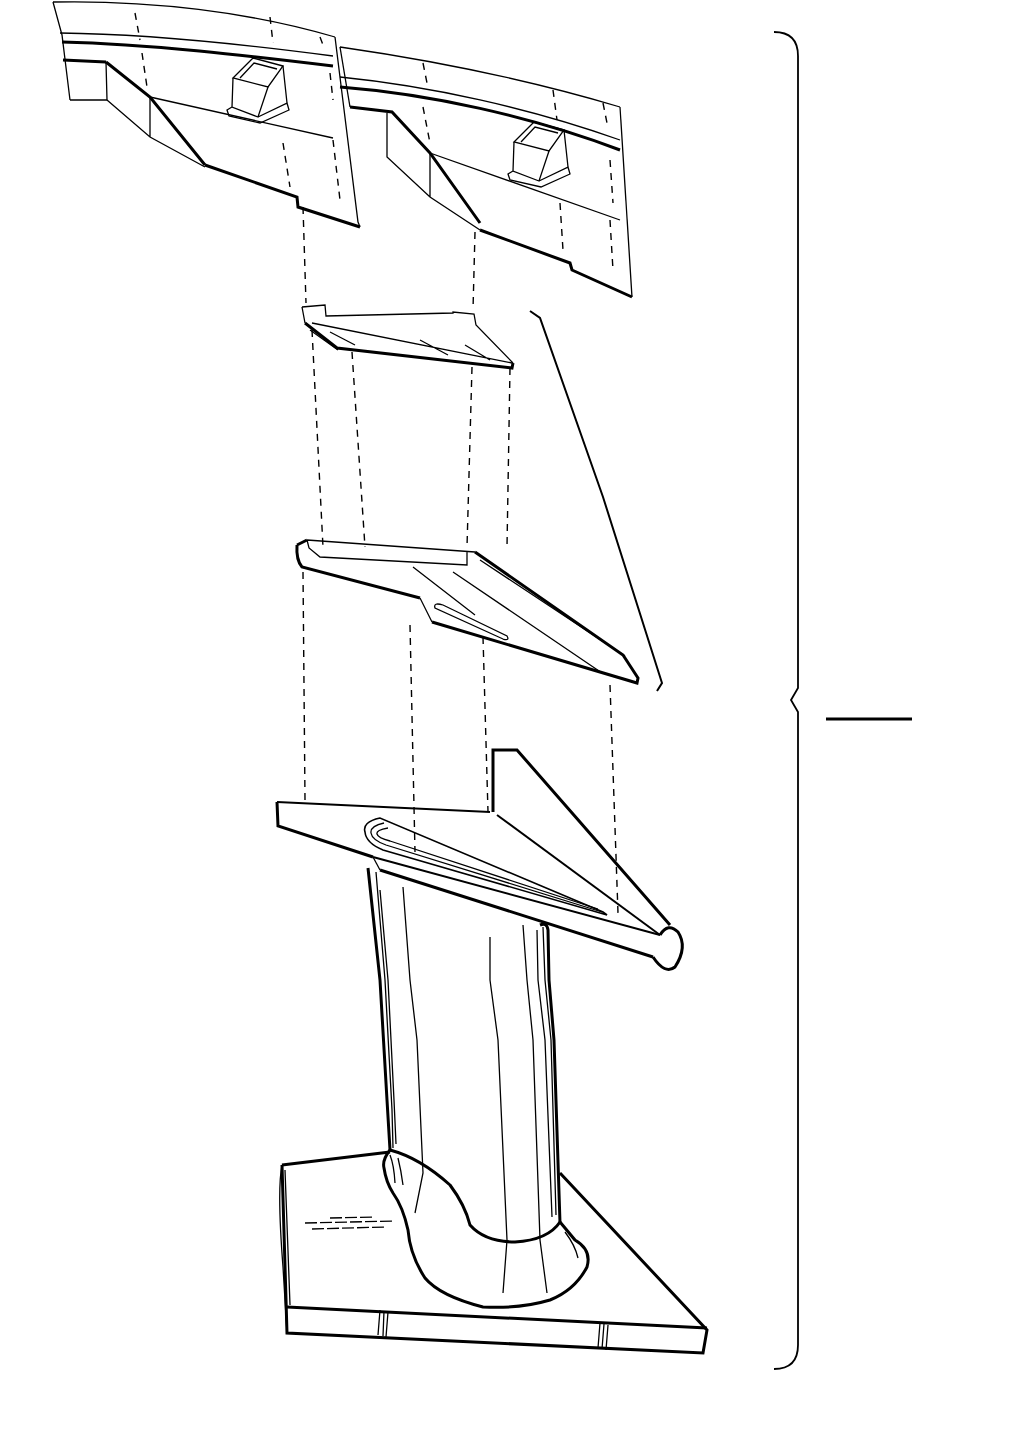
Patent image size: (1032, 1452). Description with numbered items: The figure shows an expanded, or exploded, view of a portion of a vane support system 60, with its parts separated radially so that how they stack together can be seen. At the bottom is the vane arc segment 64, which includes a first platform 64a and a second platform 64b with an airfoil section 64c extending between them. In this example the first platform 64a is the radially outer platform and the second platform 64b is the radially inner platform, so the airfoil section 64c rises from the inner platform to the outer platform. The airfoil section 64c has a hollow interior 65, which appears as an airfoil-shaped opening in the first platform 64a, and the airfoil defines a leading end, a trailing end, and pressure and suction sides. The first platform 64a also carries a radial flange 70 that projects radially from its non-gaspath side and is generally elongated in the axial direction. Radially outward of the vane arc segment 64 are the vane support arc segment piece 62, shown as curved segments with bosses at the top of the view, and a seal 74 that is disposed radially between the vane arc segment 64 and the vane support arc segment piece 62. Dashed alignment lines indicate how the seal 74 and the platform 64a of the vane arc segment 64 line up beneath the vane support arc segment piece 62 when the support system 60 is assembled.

The support system 60 is at (477, 685).
The vane support arc segment piece 62 is at (370, 149).
The vane arc segment 64 is at (457, 1045).
The first platform 64a is at (454, 885).
The second platform 64b is at (457, 1251).
The airfoil section 64c is at (490, 1080).
The hollow interior 65 is at (486, 838).
The radial flange 70 is at (581, 836).
The seal 74 is at (598, 501).